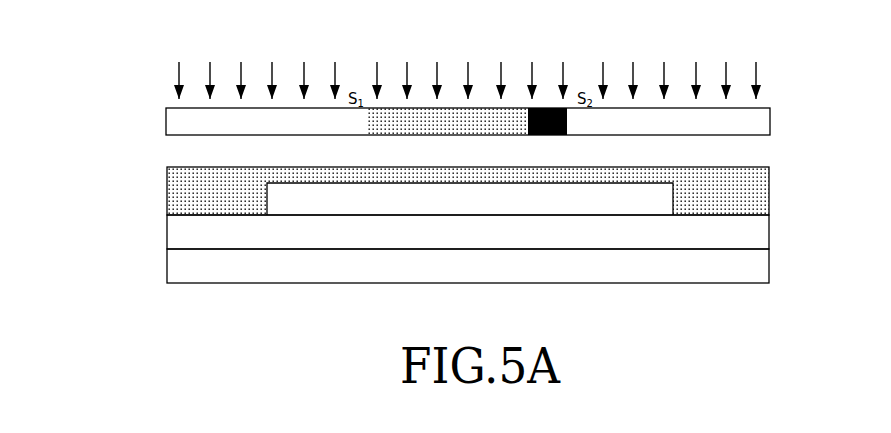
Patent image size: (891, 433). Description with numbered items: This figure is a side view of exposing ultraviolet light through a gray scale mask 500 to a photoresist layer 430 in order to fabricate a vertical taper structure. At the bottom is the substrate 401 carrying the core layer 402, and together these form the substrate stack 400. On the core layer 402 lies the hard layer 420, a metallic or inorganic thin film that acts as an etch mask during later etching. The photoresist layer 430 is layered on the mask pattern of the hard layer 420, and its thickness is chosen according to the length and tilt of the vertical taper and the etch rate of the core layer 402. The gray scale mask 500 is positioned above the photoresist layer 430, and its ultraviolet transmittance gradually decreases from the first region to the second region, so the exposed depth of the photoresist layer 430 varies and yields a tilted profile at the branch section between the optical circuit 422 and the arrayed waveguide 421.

The gray scale mask 500 is at (403, 118).
The substrate 400 is at (484, 254).
The substrate 401 is at (743, 268).
The core layer 402 is at (742, 226).
The hard layer 420 is at (483, 157).
The arrayed waveguide 421 is at (278, 203).
The optical circuit 422 is at (652, 189).
The photoresist layer 430 is at (187, 202).